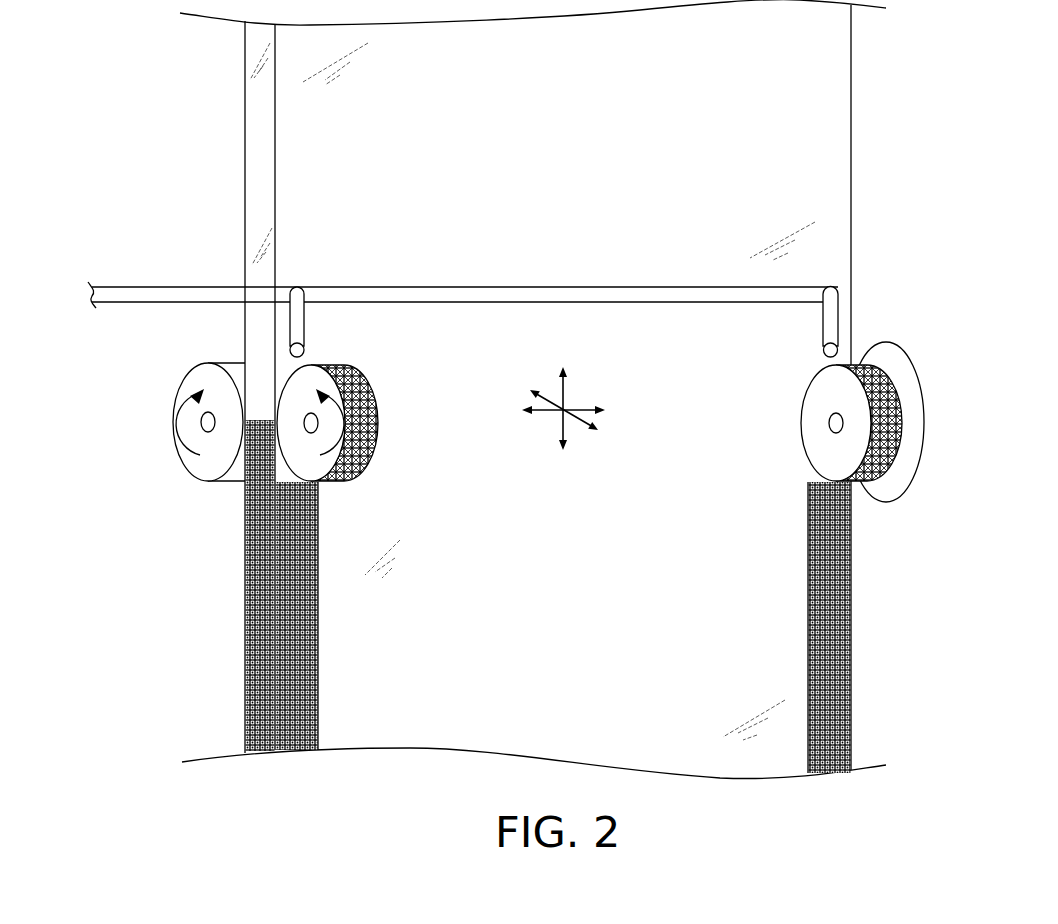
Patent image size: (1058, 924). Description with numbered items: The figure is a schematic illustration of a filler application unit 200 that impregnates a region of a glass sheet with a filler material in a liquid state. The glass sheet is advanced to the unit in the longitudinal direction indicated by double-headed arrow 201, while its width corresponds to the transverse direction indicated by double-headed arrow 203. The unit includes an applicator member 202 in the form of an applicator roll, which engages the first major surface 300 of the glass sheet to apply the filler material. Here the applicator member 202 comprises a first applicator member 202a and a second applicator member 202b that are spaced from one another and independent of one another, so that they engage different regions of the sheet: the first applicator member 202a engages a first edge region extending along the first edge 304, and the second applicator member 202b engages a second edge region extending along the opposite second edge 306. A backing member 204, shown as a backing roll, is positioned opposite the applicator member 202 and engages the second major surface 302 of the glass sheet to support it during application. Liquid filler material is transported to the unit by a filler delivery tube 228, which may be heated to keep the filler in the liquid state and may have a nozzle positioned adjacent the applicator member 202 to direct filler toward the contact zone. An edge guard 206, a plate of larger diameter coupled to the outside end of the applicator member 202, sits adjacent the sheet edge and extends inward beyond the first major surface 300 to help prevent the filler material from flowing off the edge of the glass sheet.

The filler application unit 200 is at (502, 377).
The double-headed arrow 201 is at (579, 414).
The applicator member 202 is at (370, 418).
The first applicator member 202a is at (303, 382).
The second applicator member 202b is at (827, 388).
The double-headed arrow 203 is at (577, 410).
The backing member 204 is at (208, 470).
The edge guard 206 is at (873, 364).
The filler delivery tube 228 is at (145, 292).
The first major surface 300 is at (830, 42).
The second major surface 302 is at (853, 62).
The first edge 304 is at (260, 100).
The second edge 306 is at (853, 137).